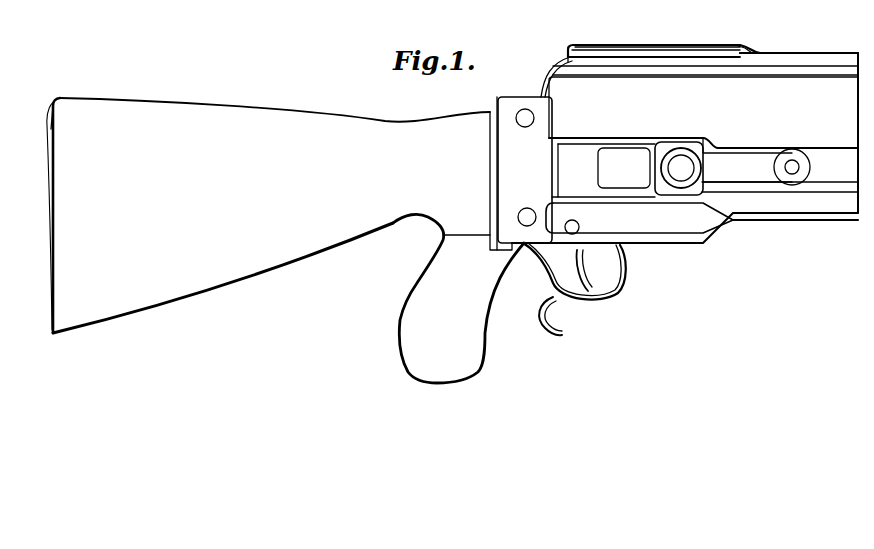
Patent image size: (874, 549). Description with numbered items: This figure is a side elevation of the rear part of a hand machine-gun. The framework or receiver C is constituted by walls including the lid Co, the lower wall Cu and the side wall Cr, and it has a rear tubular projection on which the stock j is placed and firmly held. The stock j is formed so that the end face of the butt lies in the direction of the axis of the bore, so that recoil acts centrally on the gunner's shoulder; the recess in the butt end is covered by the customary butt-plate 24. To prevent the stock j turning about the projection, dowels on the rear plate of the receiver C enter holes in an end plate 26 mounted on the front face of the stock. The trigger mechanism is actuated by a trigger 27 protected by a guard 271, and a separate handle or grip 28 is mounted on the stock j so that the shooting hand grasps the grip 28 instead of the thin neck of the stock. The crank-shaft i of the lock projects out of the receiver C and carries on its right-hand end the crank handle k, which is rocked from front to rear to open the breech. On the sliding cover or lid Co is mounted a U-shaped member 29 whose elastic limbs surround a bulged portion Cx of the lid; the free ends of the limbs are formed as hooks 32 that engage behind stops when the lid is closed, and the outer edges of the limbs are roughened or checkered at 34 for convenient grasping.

The butt-plate 24 is at (51, 127).
The stock j is at (273, 119).
The end plate 26 is at (489, 136).
The handle or grip 28 is at (420, 306).
The hooks 32 is at (566, 55).
The roughened or checkered edges 34 is at (598, 50).
The bulged portion of the lid Cx is at (637, 48).
The U-shaped member 29 is at (672, 49).
The receiver C is at (685, 148).
The side wall of the receiver Cr is at (780, 141).
The cover or lid Co is at (817, 62).
The wall of the receiver Cu is at (840, 212).
The crank handle k is at (767, 170).
The crank-shaft i is at (680, 170).
The trigger 27 is at (579, 268).
The guard 271 is at (594, 316).